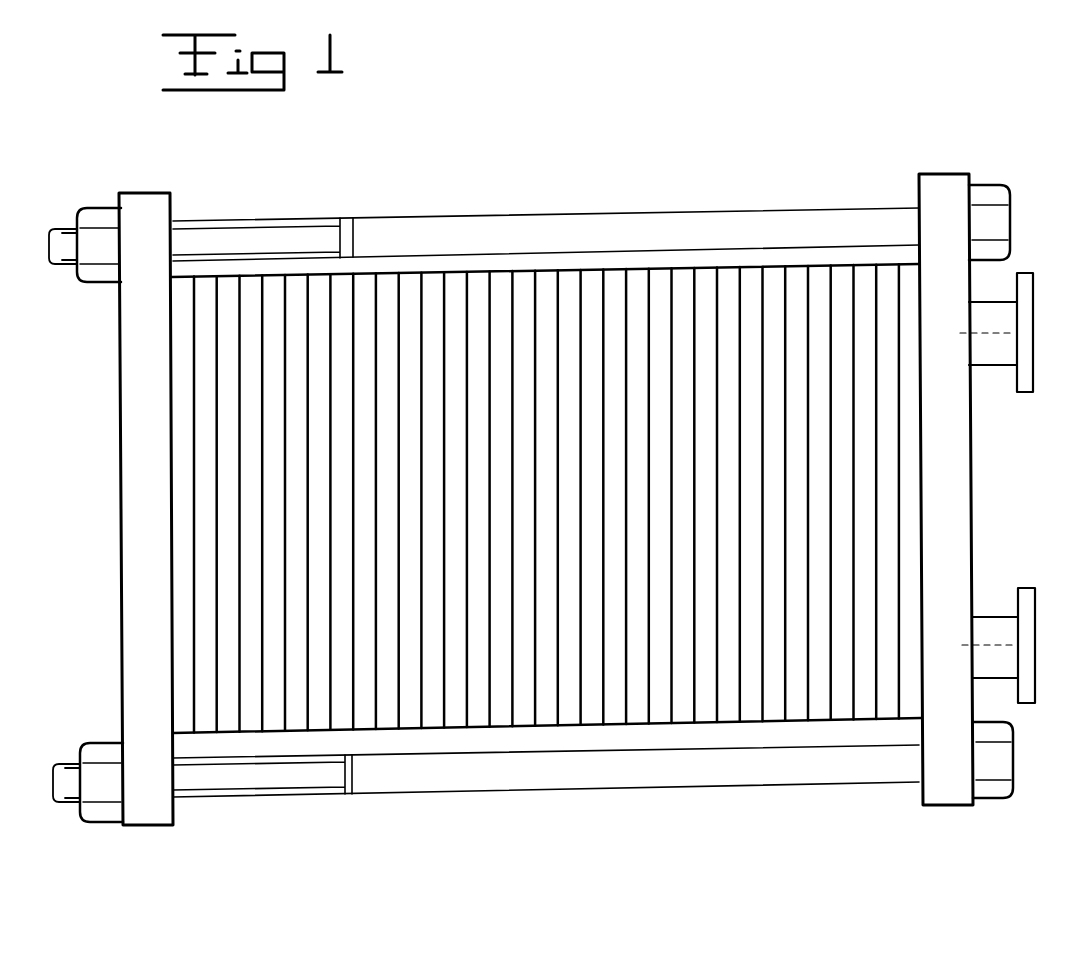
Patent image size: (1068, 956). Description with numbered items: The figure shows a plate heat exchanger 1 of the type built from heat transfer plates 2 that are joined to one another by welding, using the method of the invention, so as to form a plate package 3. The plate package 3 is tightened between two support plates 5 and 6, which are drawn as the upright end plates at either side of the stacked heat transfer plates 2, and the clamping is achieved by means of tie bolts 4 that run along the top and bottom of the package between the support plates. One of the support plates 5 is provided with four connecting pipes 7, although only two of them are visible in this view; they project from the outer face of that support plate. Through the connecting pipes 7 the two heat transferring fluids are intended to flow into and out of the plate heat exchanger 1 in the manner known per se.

The plate heat exchanger 1 is at (718, 146).
The heat transfer plates 2 is at (540, 323).
The plate package 3 is at (762, 259).
The tie bolts 4 is at (378, 238).
The support plate 5 is at (943, 192).
The support plate 6 is at (130, 382).
The connecting pipes 7 is at (1005, 352).